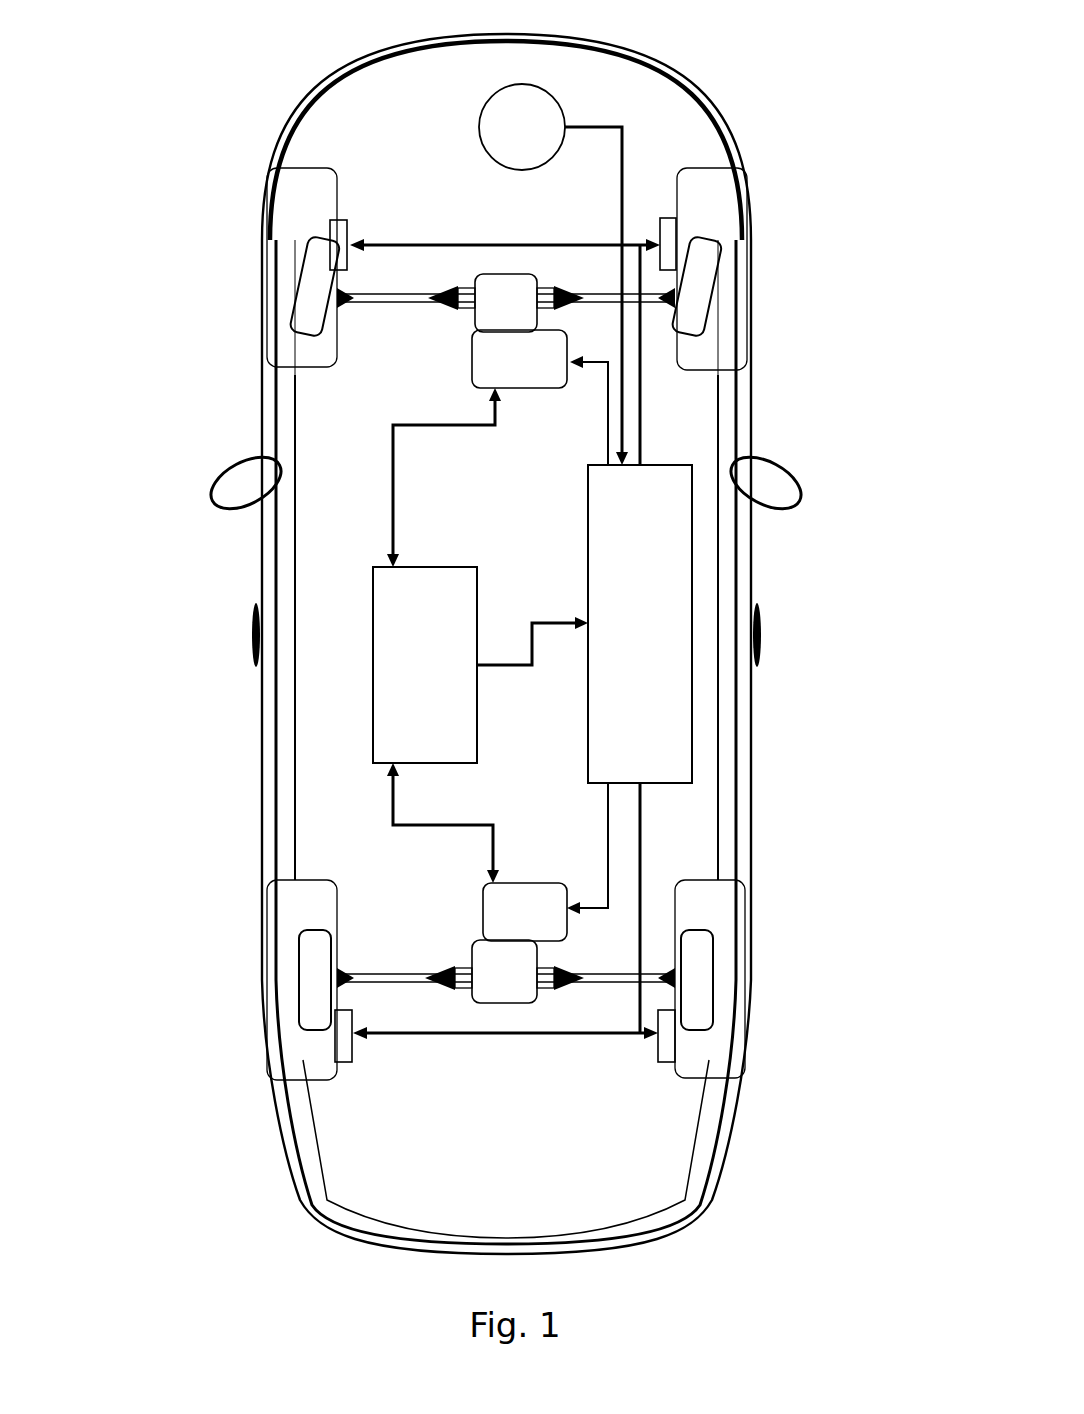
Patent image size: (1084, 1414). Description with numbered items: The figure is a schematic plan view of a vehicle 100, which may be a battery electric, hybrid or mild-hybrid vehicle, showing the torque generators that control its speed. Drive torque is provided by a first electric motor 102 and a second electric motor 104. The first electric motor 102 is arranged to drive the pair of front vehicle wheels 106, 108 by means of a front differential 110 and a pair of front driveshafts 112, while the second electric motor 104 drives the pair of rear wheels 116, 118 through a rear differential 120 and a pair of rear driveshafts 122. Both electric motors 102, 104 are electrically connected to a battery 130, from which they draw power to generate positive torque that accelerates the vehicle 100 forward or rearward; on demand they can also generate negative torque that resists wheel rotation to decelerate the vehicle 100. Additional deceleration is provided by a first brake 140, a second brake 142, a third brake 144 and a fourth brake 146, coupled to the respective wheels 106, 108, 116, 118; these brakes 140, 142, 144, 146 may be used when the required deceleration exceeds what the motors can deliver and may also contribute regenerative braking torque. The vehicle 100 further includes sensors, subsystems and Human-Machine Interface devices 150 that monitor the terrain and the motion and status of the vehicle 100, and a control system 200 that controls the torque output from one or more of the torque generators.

The vehicle 100 is at (198, 92).
The first electric motor 102 is at (503, 363).
The second electric motor 104 is at (500, 912).
The front vehicle wheel 106 is at (300, 347).
The front vehicle wheel 108 is at (722, 205).
The front differential 110 is at (505, 292).
The front driveshafts 112 is at (410, 295).
The rear wheel 116 is at (300, 1032).
The rear wheel 118 is at (735, 1060).
The rear differential 120 is at (498, 988).
The rear driveshafts 122 is at (383, 970).
The battery 130 is at (393, 685).
The first brake 140 is at (330, 240).
The second brake 142 is at (677, 233).
The third brake 144 is at (350, 1035).
The fourth brake 146 is at (660, 1033).
The Human-Machine Interface (HMI) devices 150 is at (550, 108).
The control system 200 is at (673, 714).